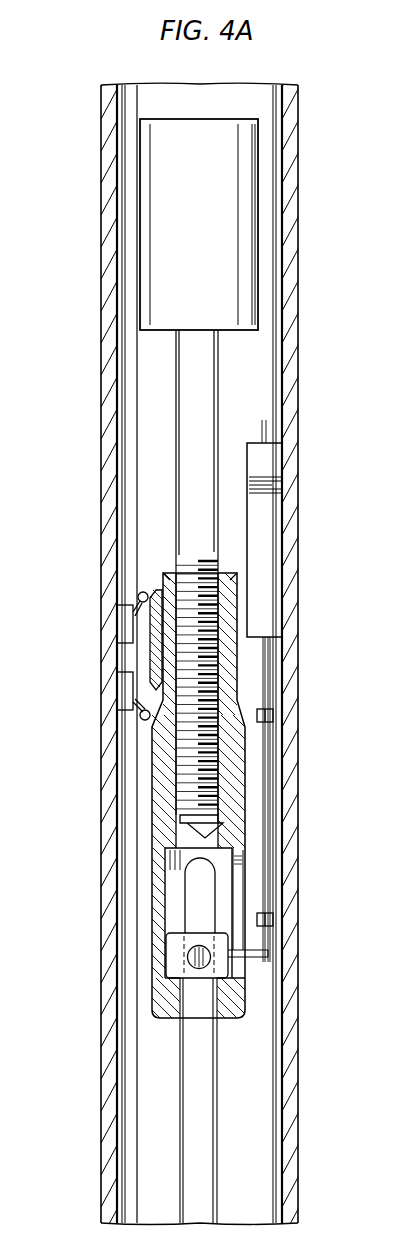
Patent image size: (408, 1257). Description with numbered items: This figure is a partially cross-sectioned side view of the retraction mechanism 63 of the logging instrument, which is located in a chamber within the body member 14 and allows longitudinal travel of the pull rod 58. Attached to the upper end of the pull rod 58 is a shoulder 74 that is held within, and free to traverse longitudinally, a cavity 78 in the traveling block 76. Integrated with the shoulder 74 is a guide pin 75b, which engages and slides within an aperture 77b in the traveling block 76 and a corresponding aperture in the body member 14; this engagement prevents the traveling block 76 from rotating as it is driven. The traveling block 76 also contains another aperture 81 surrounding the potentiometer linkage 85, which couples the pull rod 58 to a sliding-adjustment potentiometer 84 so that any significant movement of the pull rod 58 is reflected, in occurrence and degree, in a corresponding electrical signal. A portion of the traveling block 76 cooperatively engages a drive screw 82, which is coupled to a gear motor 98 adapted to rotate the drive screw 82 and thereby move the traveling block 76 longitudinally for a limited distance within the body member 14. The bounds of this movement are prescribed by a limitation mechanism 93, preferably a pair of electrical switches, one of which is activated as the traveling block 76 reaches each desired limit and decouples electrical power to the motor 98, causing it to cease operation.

The body member 14 is at (104, 1063).
The pull rod 58 is at (180, 1132).
The retraction mechanism 63 is at (125, 752).
The shoulder 74 is at (185, 925).
The guide pin 75b is at (200, 960).
The traveling block 76 is at (152, 800).
The aperture 77b is at (190, 889).
The cavity 78 is at (175, 858).
The aperture 81 is at (247, 870).
The drive screw 82 is at (176, 493).
The potentiometer 84 is at (267, 523).
The potentiometer linkage 85 is at (270, 757).
The limitation mechanism 93 is at (116, 647).
The gear motor 98 is at (140, 230).